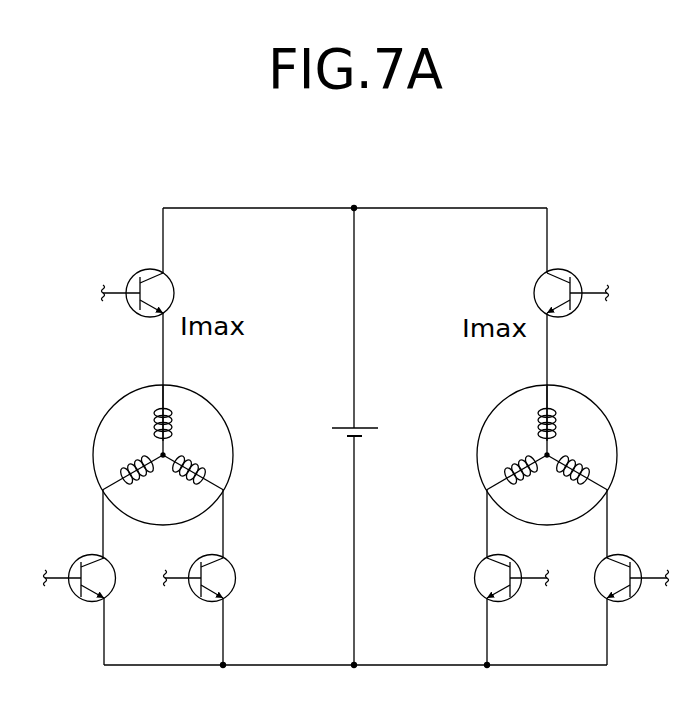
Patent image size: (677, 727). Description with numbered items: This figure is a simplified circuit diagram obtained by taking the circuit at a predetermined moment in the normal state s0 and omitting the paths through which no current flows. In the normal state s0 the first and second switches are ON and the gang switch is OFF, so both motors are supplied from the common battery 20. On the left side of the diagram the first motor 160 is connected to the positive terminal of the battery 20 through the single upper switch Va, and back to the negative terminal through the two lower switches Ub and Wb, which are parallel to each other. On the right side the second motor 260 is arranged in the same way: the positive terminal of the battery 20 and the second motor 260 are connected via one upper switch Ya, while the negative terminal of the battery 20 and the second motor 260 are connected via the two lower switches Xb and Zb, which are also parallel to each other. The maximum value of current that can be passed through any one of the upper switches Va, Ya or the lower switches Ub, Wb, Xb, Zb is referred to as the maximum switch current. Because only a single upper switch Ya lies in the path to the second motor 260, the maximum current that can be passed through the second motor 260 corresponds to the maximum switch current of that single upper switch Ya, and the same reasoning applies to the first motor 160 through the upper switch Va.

The normal state s0 is at (477, 176).
The battery 20 is at (368, 428).
The first motor 160 is at (118, 400).
The second motor 260 is at (616, 393).
The upper switch Va is at (172, 271).
The upper switch Ya is at (545, 273).
The lower switch Ub is at (87, 554).
The lower switch Wb is at (233, 568).
The lower switch Zb is at (476, 568).
The lower switch Xb is at (622, 553).